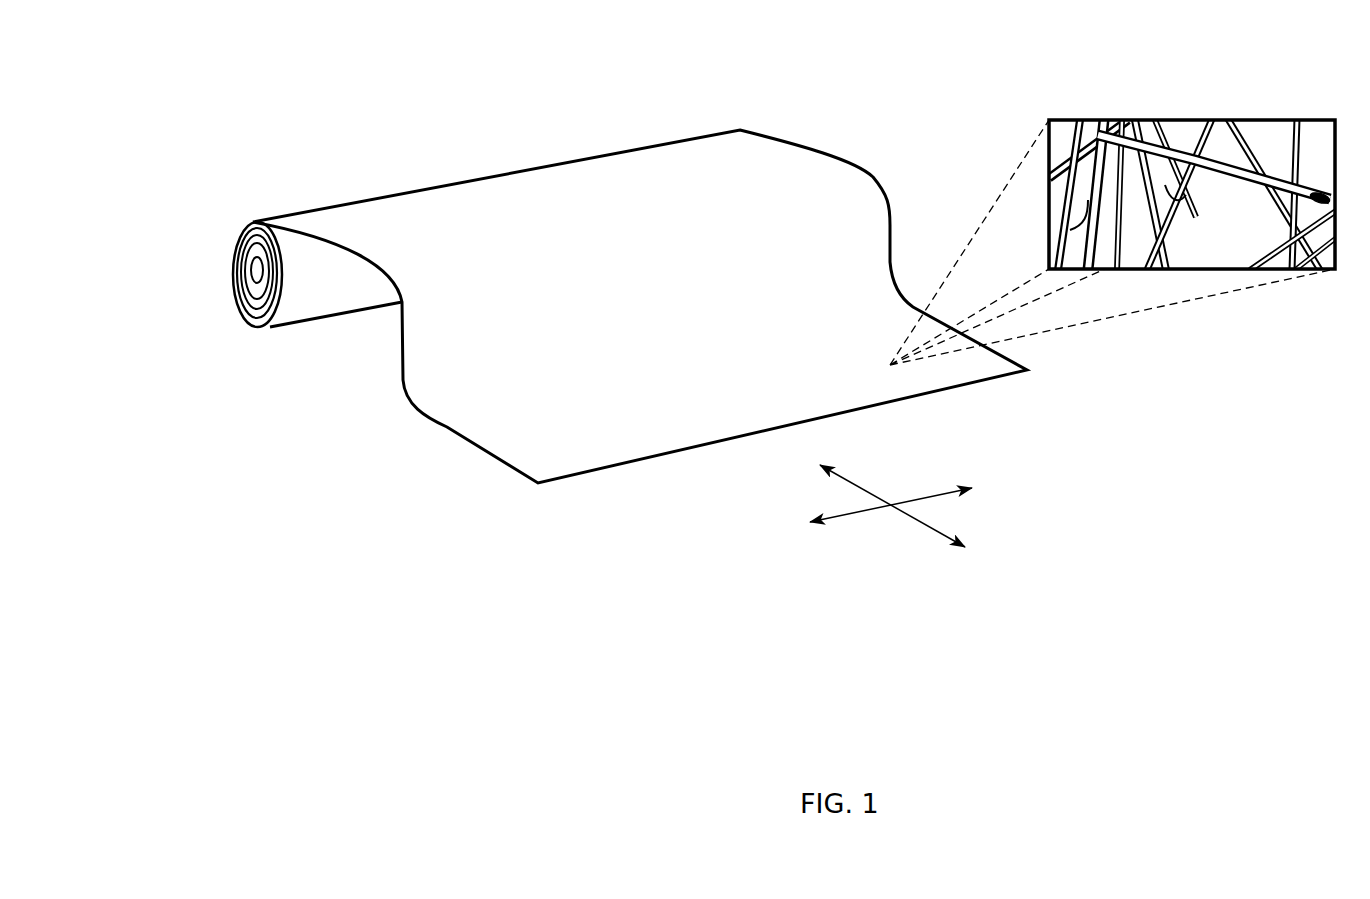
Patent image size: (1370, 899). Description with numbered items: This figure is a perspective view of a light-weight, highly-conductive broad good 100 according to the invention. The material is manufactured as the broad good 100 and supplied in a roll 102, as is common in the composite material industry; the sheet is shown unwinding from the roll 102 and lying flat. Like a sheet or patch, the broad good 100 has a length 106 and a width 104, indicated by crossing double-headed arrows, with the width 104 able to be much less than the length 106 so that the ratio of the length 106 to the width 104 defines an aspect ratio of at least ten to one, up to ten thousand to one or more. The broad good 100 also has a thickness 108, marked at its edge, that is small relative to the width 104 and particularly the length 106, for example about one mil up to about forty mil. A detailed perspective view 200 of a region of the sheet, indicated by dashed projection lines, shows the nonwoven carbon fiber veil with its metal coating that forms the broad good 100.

The broad good 100 is at (883, 75).
The roll 102 is at (244, 219).
The width 104 is at (833, 517).
The length 106 is at (853, 480).
The thickness 108 is at (608, 400).
The detailed perspective view 200 is at (1208, 120).